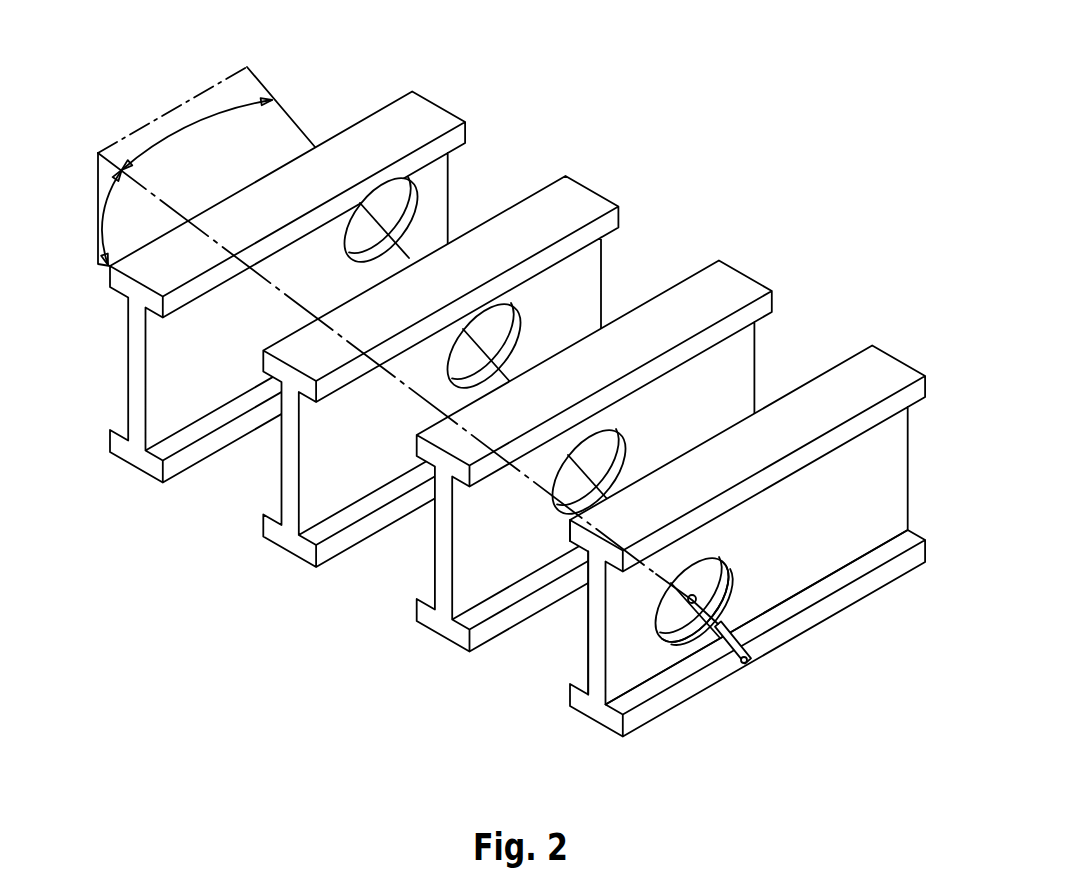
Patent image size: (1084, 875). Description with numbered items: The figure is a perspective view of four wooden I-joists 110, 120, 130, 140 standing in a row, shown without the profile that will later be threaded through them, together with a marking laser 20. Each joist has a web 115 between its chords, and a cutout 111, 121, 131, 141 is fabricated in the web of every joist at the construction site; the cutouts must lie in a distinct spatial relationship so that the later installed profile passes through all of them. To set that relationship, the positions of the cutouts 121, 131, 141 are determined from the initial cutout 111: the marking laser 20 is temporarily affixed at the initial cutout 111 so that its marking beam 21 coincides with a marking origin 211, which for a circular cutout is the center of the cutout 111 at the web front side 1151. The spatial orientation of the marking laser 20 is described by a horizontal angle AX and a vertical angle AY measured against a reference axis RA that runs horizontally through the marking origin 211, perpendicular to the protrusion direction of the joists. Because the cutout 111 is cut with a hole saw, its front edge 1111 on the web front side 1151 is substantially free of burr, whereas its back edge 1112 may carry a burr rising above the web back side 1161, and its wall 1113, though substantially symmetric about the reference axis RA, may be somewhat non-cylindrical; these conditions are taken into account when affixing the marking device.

The I-joist 110 is at (589, 741).
The I-joist 120 is at (411, 648).
The I-joist 130 is at (266, 562).
The I-joist 140 is at (121, 483).
The initial cutout 111 is at (702, 644).
The cutout 121 is at (638, 424).
The cutout 131 is at (533, 307).
The cutout 141 is at (425, 189).
The front edge 1111 is at (696, 595).
The back edge 1112 is at (716, 572).
The wall 1113 is at (720, 584).
The web 115 is at (596, 662).
The web front side 1151 is at (639, 650).
The web back side 1161 is at (576, 648).
The marking laser 20 is at (746, 663).
The marking origin 211 is at (730, 620).
The marking beam 21 is at (282, 108).
The reference axis RA is at (592, 512).
The horizontal angle AX is at (177, 133).
The vertical angle AY is at (102, 212).